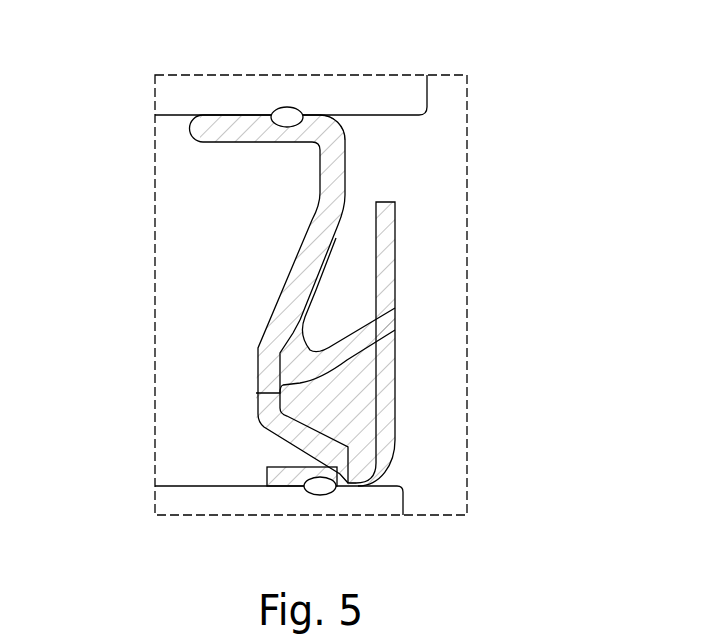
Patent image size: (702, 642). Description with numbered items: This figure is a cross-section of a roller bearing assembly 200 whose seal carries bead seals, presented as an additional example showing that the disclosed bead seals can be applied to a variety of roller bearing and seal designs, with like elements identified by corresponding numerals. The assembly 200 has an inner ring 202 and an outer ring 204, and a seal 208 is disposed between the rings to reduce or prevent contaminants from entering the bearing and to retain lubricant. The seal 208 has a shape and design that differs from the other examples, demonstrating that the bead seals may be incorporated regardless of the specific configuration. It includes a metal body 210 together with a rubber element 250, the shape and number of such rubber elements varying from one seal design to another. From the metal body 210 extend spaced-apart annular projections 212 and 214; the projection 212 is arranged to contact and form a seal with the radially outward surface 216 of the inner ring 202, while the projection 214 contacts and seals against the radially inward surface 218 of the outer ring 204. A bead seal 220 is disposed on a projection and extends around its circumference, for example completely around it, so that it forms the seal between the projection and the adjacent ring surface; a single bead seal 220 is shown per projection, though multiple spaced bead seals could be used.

The roller bearing assembly 200 is at (116, 130).
The inner ring 202 is at (390, 503).
The outer ring 204 is at (385, 103).
The seal 208 is at (404, 222).
The metal body 210 is at (356, 302).
The annular projection 212 is at (283, 478).
The annular projection 214 is at (225, 132).
The radially outward surface 216 is at (347, 487).
The radially inward surface 218 is at (310, 118).
The bead seal 220 is at (288, 113).
The rubber element 250 is at (362, 352).